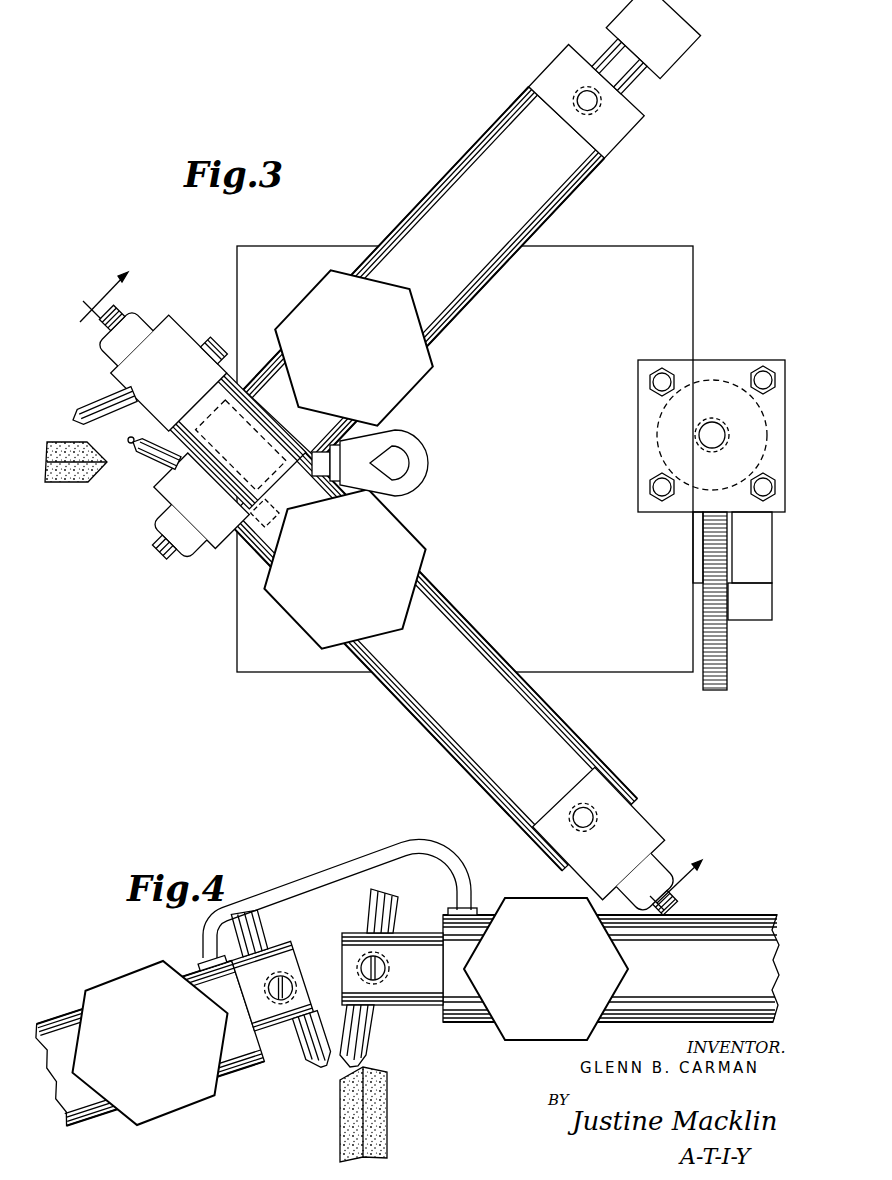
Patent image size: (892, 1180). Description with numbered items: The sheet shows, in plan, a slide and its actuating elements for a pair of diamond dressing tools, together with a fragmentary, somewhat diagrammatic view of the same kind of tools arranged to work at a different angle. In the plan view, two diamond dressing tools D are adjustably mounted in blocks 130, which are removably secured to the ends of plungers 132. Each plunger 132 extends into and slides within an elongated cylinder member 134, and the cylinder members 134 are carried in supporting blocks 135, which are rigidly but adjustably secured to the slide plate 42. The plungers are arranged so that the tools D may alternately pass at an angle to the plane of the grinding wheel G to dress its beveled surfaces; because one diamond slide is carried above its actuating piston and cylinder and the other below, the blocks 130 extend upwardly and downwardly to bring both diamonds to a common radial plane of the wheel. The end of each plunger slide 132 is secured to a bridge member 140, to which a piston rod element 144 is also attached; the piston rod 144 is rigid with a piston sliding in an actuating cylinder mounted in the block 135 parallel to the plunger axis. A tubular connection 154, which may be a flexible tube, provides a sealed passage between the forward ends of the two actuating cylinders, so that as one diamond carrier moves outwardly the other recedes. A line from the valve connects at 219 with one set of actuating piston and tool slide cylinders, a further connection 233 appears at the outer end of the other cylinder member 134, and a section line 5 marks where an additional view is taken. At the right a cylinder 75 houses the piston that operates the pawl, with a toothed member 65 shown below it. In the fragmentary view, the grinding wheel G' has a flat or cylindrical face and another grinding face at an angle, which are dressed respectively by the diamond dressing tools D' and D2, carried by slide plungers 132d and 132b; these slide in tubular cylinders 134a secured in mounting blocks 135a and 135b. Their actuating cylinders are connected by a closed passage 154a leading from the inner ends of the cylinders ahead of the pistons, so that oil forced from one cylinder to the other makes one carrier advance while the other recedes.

In FIG. 3, the slide plate 42 is at (585, 247).
In FIG. 3, the cylinder 75 is at (713, 360).
In FIG. 3, the rack 65 is at (728, 645).
In FIG. 3, the cylinder member 134 is at (485, 283).
In FIG. 3, the supporting block 135 is at (413, 380).
In FIG. 3, the tubular connection 154 is at (427, 462).
In FIG. 3, the block 130 is at (170, 325).
In FIG. 3, the plunger 132 is at (246, 450).
In FIG. 3, the bridge member 140 is at (640, 832).
In FIG. 3, the piston rod element 144 is at (622, 92).
In FIG. 3, the port 233 is at (596, 85).
In FIG. 3, the connection 219 is at (594, 826).
In FIG. 3, the diamond dressing tool D is at (113, 437).
In FIG. 3, the grinding wheel G is at (76, 476).
In FIG. 3, the section line 5- 5 is at (391, 591).
In FIG. 4, the tubular cylinder 134a is at (230, 1073).
In FIG. 4, the mounting block 135b is at (112, 987).
In FIG. 4, the slide plunger 132b is at (292, 965).
In FIG. 4, the diamond dressing tool D2 is at (308, 1070).
In FIG. 4, the closed passage 154a is at (357, 858).
In FIG. 4, the tool holder block 132d is at (392, 947).
In FIG. 4, the diamond dressing tool D' is at (372, 1036).
In FIG. 4, the mounting block 135a is at (520, 1033).
In FIG. 4, the grinding wheel G' is at (377, 1114).